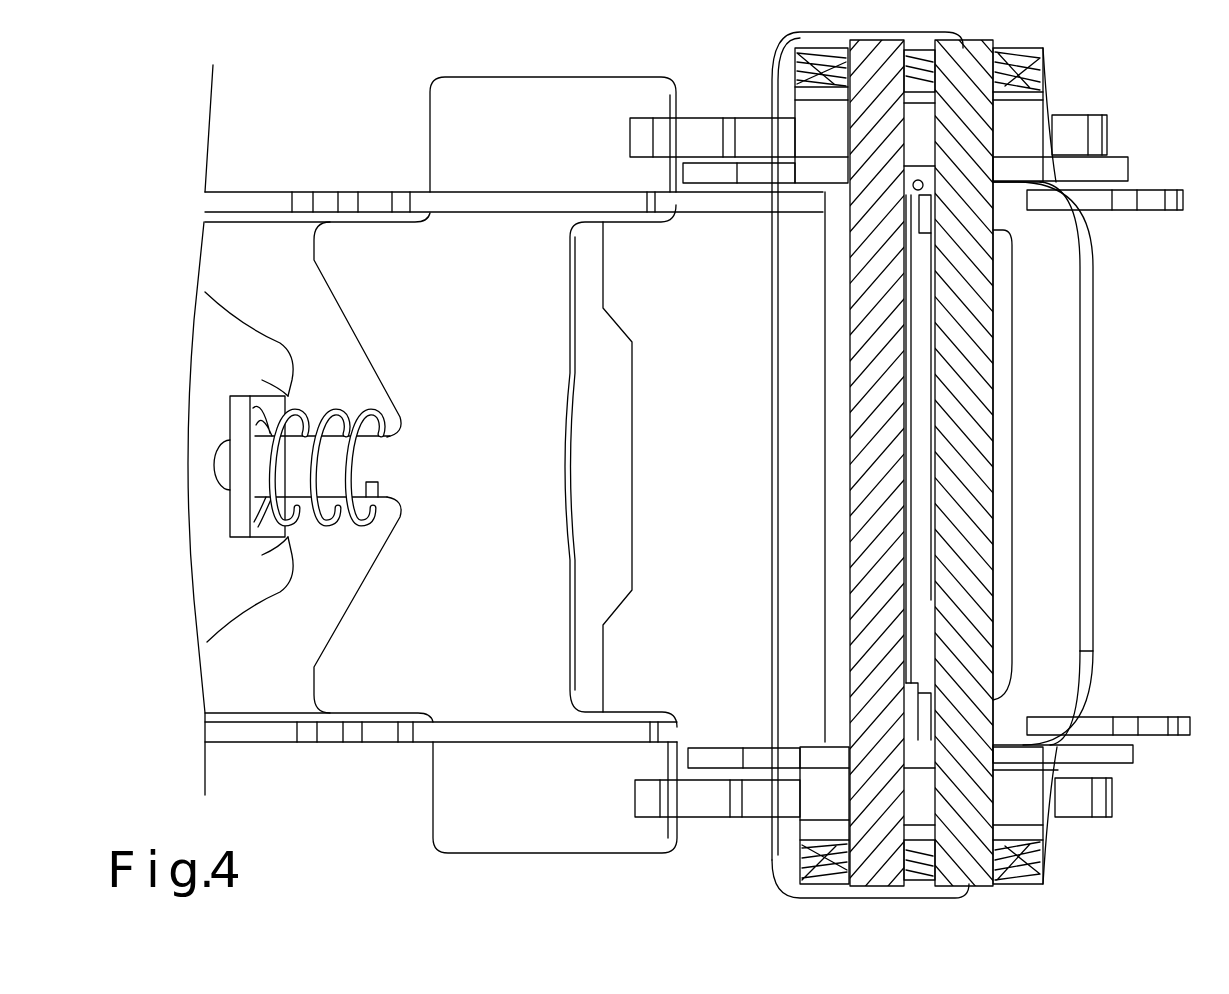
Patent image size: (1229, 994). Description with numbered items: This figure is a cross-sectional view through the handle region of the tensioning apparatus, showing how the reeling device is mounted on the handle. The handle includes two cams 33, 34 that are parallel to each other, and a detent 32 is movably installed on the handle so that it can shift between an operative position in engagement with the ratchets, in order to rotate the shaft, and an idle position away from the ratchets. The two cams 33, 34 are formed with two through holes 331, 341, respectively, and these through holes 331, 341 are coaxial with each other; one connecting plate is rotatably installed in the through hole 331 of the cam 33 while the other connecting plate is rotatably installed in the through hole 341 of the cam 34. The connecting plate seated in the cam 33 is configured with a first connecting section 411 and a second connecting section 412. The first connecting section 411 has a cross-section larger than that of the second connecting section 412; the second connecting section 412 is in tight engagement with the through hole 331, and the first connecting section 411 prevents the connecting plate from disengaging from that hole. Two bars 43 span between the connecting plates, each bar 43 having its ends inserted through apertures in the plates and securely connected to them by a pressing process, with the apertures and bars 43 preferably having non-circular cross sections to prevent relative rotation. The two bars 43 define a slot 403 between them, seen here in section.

The first connecting section 411 is at (795, 58).
The second connecting section 412 is at (830, 78).
The through hole 341 is at (1040, 86).
The cam 34 is at (1027, 140).
The bar 43 is at (892, 320).
The detent 32 is at (1043, 358).
The slot 403 is at (918, 537).
The cam 33 is at (1033, 787).
The through hole 331 is at (1010, 847).